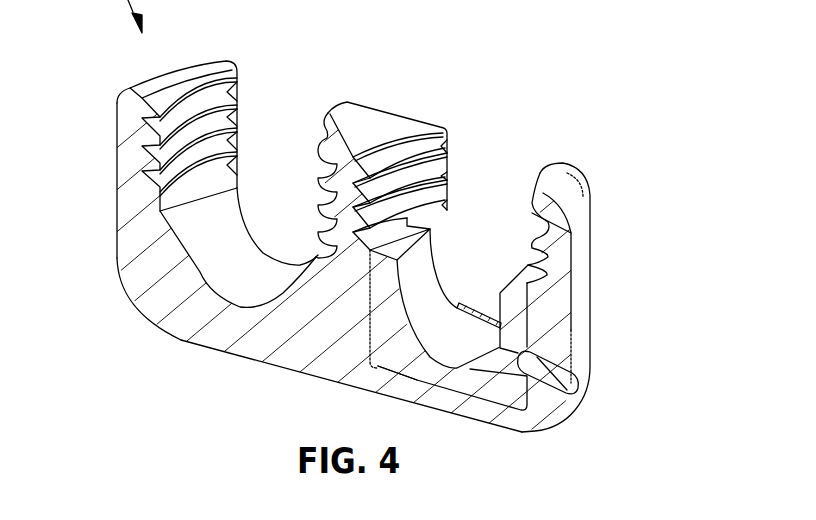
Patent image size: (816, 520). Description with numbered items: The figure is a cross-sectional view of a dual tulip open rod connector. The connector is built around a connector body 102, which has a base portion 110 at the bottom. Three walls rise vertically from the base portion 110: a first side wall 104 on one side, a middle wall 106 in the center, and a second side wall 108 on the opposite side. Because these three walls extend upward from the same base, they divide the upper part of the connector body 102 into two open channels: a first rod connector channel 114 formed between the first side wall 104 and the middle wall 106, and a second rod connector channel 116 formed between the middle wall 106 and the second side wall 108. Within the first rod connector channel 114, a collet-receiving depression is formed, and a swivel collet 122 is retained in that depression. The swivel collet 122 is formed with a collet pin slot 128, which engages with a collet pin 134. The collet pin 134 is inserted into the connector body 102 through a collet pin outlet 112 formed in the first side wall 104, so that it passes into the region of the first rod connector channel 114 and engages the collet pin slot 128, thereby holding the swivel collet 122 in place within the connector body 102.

The connector body 102 is at (137, 303).
The first side wall 104 is at (572, 300).
The middle wall 106 is at (340, 245).
The second side wall 108 is at (117, 173).
The base portion 110 is at (267, 360).
The collet pin outlet 112 is at (543, 383).
The first rod connector channel 114 is at (492, 222).
The second rod connector channel 116 is at (287, 157).
The swivel collet 122 is at (448, 378).
The collet pin slot 128 is at (500, 325).
The collet pin 134 is at (581, 377).